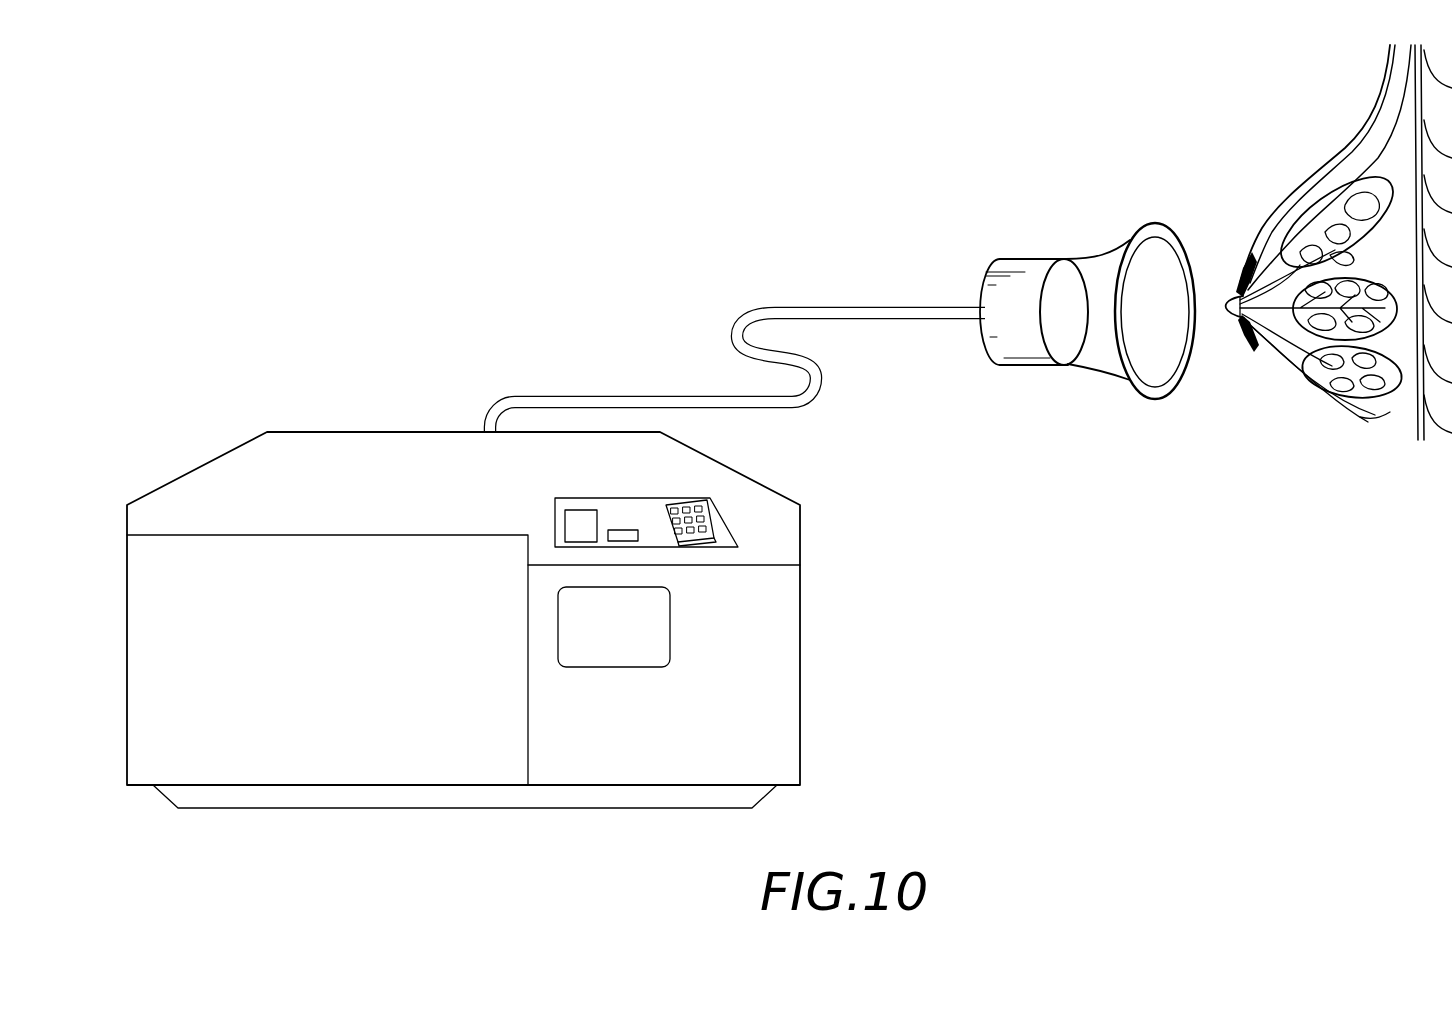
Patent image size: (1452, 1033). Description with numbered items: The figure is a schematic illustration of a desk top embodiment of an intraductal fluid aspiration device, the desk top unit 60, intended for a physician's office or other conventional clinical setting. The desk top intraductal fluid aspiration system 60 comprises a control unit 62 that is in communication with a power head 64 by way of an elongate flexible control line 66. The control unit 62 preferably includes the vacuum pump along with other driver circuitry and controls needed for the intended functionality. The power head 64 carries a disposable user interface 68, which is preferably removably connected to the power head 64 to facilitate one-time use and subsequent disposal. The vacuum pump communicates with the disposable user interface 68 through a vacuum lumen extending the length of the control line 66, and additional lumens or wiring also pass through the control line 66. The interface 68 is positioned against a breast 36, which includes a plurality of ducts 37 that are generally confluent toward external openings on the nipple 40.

The breast 36 is at (1297, 190).
The ducts 37 is at (1243, 272).
The nipple 40 is at (1228, 316).
The desk top unit 60 is at (628, 296).
The control unit 62 is at (345, 398).
The power head 64 is at (1028, 258).
The elongate flexible control line 66 is at (818, 400).
The disposable user interface 68 is at (1125, 380).